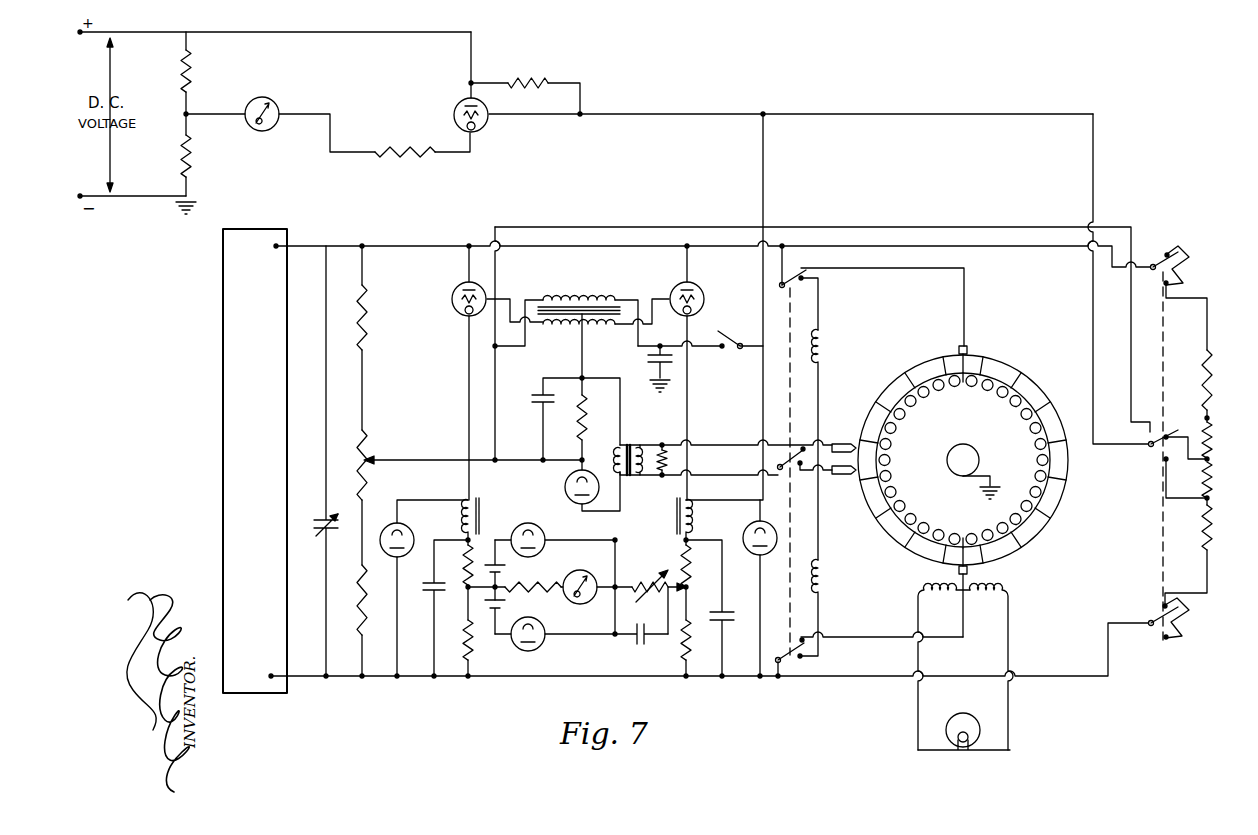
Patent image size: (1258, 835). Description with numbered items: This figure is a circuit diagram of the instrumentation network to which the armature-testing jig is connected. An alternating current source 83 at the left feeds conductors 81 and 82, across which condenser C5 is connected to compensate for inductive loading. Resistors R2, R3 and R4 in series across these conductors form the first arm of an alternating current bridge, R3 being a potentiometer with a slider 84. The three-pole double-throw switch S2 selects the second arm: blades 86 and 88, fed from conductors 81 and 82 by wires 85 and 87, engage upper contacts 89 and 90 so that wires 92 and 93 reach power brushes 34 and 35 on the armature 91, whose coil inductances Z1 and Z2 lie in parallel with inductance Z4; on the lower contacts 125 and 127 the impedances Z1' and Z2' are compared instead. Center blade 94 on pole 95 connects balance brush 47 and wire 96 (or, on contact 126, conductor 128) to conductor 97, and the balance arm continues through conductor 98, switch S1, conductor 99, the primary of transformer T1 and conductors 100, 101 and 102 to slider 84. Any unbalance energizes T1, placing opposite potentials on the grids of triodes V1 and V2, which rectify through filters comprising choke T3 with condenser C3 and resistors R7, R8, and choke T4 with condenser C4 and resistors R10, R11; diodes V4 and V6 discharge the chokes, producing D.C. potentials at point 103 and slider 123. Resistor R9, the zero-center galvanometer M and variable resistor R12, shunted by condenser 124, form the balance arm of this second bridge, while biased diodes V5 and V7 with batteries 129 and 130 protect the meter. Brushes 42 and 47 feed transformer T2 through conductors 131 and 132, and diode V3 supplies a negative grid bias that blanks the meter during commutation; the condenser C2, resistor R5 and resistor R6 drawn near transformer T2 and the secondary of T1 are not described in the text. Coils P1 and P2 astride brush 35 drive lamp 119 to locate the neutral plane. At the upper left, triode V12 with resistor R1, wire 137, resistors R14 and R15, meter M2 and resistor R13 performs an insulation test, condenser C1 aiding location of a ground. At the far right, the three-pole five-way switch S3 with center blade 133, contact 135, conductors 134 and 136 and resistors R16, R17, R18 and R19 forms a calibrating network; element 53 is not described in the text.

The resistor R14 is at (192, 76).
The resistor R15 is at (192, 162).
The meter M2 is at (271, 130).
The resistor R13 is at (410, 157).
The triode tube V12 is at (484, 130).
The resistor R1 is at (532, 81).
The wire 137 is at (665, 115).
The conductor 134 is at (926, 115).
The conductor 97 is at (764, 178).
The conductor 81 is at (300, 243).
The conductor 82 is at (300, 679).
The alternating current source 83 is at (258, 554).
The condenser C5 is at (318, 531).
The resistor R2 is at (368, 308).
The variable resistor R3 is at (366, 480).
The resistor R4 is at (366, 592).
The slider 84 is at (374, 458).
The conductor 102 is at (436, 461).
The triode V1 is at (456, 288).
The conductor 101 is at (496, 388).
The transformer T1 is at (579, 295).
The conductor 100 is at (525, 346).
The conductor 99 is at (640, 344).
The condenser C1 is at (650, 364).
The switch S1 is at (740, 353).
The conductor 98 is at (742, 341).
The triode V2 is at (694, 285).
The capacitor C2 is at (540, 404).
The resistor R5 is at (586, 407).
The diode V3 is at (570, 484).
The transformer T2 is at (625, 477).
The resistor R6 is at (672, 460).
The conductor 131 is at (706, 444).
The conductor 132 is at (716, 470).
The blade 94 is at (780, 457).
The pole 95 is at (802, 447).
The wire 96 is at (827, 445).
The conductor 128 is at (805, 472).
The contact 126 is at (792, 471).
The balance brush 47 is at (850, 444).
The brush 42 is at (846, 475).
The wire 85 is at (780, 262).
The upper contact 89 is at (805, 269).
The blade 86 is at (813, 279).
The contact 125 is at (809, 286).
The wire 92 is at (891, 269).
The impedance Z1' is at (834, 445).
The impedance Z2' is at (829, 608).
The three-pole double-throw switch S2 is at (788, 471).
The armature 91 is at (932, 471).
The inductance Z1 is at (919, 421).
The inductance Z2 is at (920, 508).
The inductance Z4 is at (1007, 460).
The power brush 34 is at (968, 345).
The power brush 35 is at (968, 571).
The coil P1 is at (944, 666).
The coil P2 is at (992, 666).
The lamp 119 is at (968, 718).
The wire 93 is at (859, 637).
The upper contact 90 is at (802, 637).
The blade 88 is at (777, 656).
The contact 127 is at (801, 656).
The wire 87 is at (780, 678).
The diode V4 is at (404, 527).
The choke T3 is at (480, 510).
The resistor R7 is at (464, 570).
The condenser C3 is at (428, 591).
The point 103 is at (467, 590).
The resistor R8 is at (466, 648).
The battery 129 is at (506, 569).
The battery 130 is at (506, 606).
The biased diode V5 is at (518, 525).
The biased diode V7 is at (535, 647).
The resistor R9 is at (554, 591).
The zero-center D.C. galvanometer M is at (590, 597).
The variable resistor R12 is at (634, 584).
The slider 123 is at (670, 578).
The condenser 124 is at (636, 644).
The choke T4 is at (694, 516).
The resistor R10 is at (690, 557).
The resistor R11 is at (689, 632).
The condenser C4 is at (728, 619).
The diode V6 is at (757, 552).
The conductor 136 is at (1132, 235).
The three-pole five-way switch S3 is at (1164, 346).
The resistor R16 is at (1210, 359).
The resistor R17 is at (1210, 438).
The resistor R18 is at (1212, 481).
The resistor R19 is at (1212, 525).
The contact 135 is at (1150, 424).
The center blade 133 is at (1164, 458).
The switch 53 is at (1169, 618).